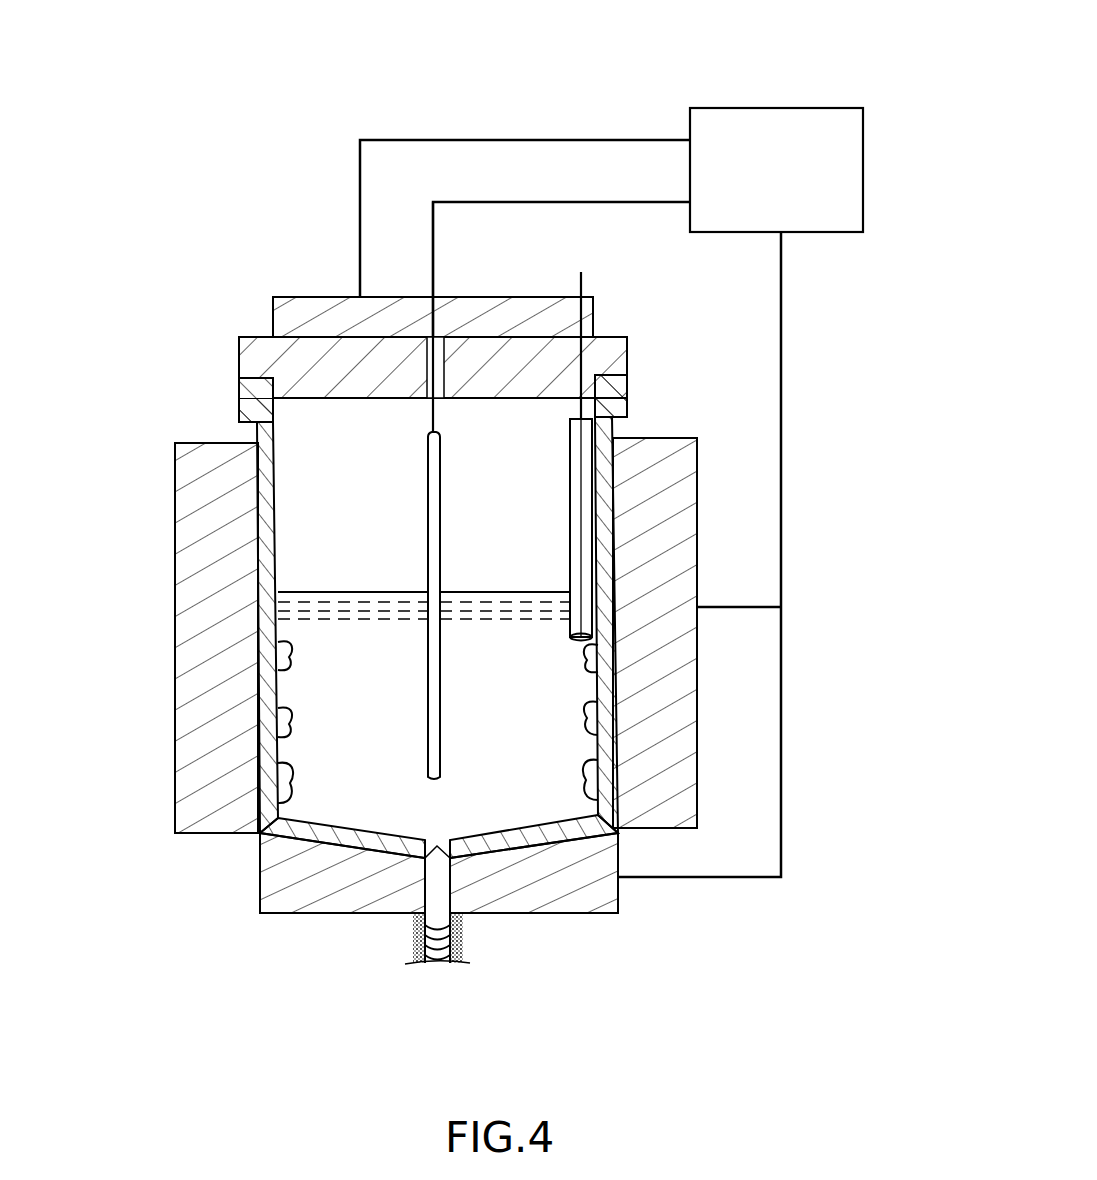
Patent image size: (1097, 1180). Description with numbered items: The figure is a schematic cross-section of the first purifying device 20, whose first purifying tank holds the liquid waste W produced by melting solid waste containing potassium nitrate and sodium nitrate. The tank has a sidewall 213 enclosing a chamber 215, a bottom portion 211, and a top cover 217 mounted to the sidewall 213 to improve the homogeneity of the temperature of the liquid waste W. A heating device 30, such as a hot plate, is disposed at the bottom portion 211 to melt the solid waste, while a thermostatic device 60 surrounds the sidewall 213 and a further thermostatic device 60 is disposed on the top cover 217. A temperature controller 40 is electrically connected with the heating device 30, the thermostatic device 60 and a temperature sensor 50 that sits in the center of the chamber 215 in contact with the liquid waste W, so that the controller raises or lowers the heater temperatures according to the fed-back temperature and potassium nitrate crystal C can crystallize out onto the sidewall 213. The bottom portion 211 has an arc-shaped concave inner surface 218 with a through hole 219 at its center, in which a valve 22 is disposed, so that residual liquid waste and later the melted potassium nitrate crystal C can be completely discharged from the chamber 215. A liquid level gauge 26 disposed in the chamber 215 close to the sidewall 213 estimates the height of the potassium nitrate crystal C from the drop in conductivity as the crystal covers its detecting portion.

The first purifying device 20 is at (223, 302).
The bottom portion 211 is at (373, 917).
The sidewall 213 is at (265, 428).
The chamber 215 is at (348, 432).
The top cover 217 is at (273, 363).
The arc-shaped concave inner surface 218 is at (505, 823).
The through hole 219 is at (437, 843).
The valve 22 is at (447, 840).
The liquid level gauge 26 is at (592, 433).
The heating device 30 is at (600, 873).
The temperature controller 40 is at (779, 152).
The temperature sensor 50 is at (433, 475).
The thermostatic device 60 is at (290, 317).
The potassium nitrate crystal C is at (282, 727).
The liquid waste W is at (332, 753).